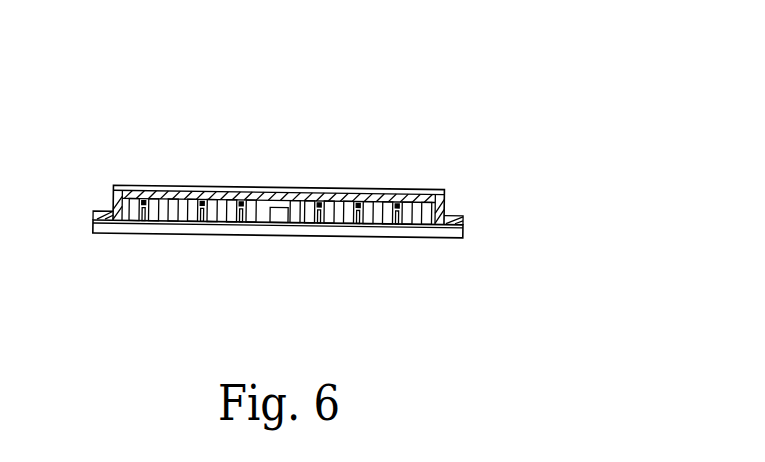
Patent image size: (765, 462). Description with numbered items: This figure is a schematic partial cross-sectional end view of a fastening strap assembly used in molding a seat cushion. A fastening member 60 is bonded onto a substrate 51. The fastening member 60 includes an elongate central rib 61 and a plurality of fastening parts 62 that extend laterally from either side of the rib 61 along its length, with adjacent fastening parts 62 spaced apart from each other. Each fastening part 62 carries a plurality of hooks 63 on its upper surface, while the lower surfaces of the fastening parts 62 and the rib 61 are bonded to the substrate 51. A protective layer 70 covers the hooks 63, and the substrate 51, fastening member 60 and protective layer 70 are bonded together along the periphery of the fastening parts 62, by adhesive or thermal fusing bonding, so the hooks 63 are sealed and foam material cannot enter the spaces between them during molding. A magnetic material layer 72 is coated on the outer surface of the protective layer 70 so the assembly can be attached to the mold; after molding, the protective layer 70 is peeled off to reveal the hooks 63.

The substrate 51 is at (460, 237).
The fastening member 60 is at (300, 214).
The elongate central rib 61 is at (282, 207).
The fastening parts 62 is at (463, 226).
The hooks 63 is at (142, 186).
The protective layer 70 is at (458, 219).
The magnetic material layer 72 is at (425, 189).